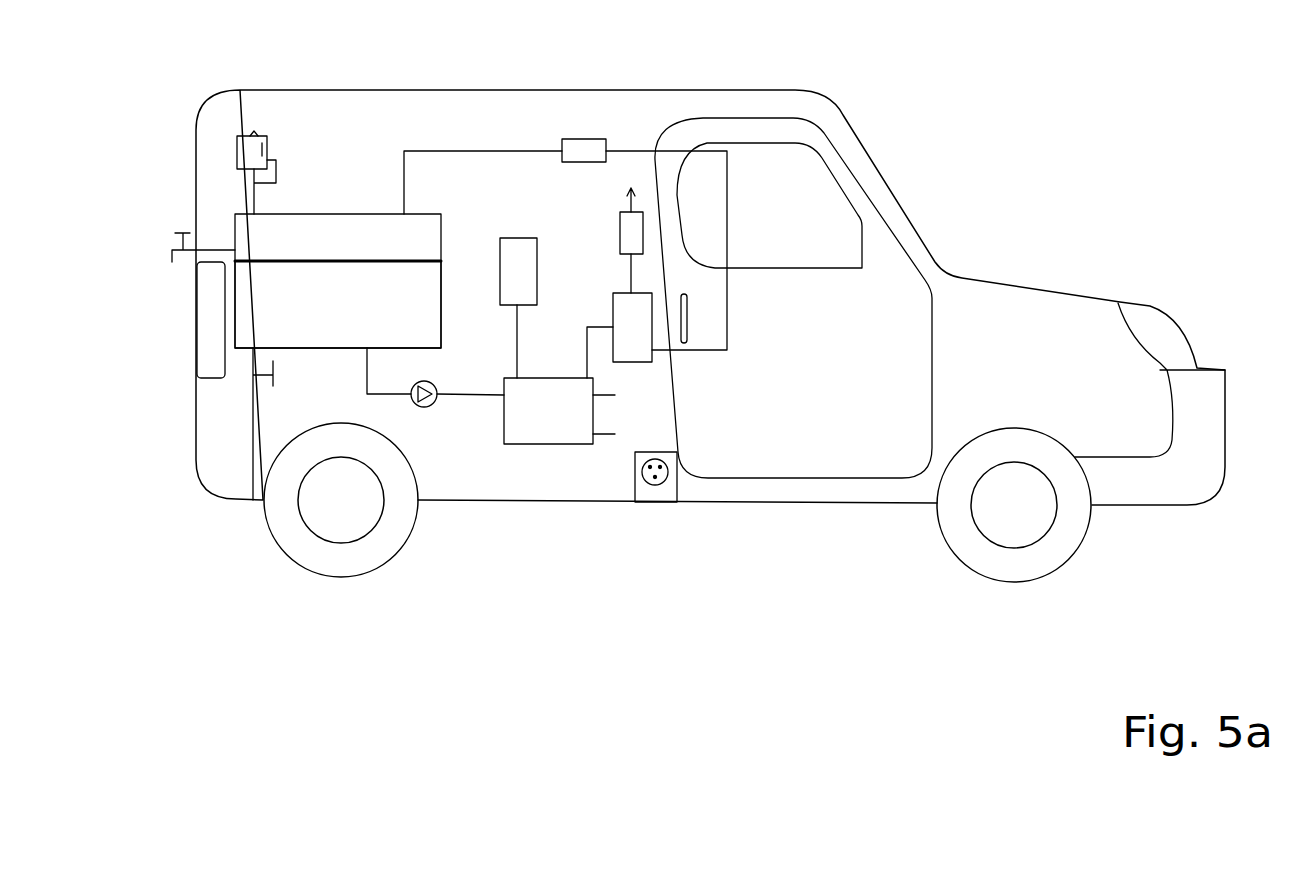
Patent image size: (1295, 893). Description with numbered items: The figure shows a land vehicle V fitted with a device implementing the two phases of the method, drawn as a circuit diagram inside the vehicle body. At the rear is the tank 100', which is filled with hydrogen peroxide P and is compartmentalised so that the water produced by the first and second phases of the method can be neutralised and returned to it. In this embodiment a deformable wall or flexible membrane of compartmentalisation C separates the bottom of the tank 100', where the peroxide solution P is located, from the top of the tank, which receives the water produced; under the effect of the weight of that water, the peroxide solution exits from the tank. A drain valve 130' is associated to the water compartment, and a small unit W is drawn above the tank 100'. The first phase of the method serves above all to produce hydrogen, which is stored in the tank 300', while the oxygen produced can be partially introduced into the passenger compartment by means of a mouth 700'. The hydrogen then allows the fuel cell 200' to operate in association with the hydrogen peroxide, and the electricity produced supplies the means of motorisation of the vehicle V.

The vehicle V is at (948, 140).
The tank 100' is at (338, 183).
The drain valve 130' is at (149, 283).
The flexible membrane of compartmentalisation C is at (267, 261).
The hydrogen peroxide P is at (260, 302).
The sensor unit W is at (248, 172).
The tank 300' is at (565, 198).
The fuel cell 200' is at (568, 462).
The mouth 700' is at (668, 190).